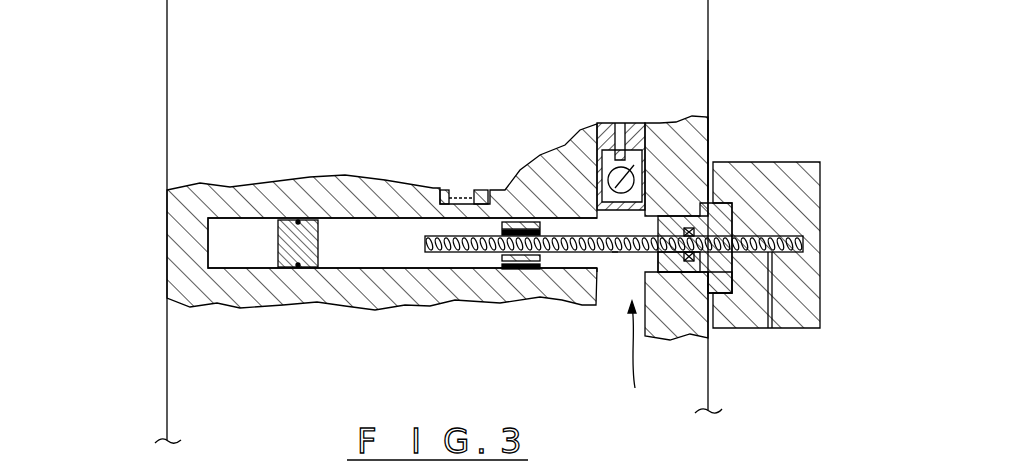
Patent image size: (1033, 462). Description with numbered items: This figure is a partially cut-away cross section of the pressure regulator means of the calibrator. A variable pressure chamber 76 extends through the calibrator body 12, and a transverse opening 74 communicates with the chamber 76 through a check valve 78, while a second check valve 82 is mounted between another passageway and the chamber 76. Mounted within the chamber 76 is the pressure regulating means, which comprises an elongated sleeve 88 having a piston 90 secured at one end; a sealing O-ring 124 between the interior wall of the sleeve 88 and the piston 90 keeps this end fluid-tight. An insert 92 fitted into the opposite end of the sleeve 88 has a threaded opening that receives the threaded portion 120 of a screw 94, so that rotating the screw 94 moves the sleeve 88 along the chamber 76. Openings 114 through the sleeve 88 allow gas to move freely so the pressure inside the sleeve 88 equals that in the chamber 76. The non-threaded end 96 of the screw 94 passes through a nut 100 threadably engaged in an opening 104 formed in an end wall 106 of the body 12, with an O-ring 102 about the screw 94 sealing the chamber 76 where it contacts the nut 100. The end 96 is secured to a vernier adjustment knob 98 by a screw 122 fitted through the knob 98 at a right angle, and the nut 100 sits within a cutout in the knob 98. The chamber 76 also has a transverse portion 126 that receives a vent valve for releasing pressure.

The calibrator body 12 is at (676, 52).
The end wall 106 is at (709, 80).
The check valve 78 is at (650, 177).
The elongated sleeve 88 is at (381, 266).
The piston 90 is at (282, 260).
The sealing O-ring 124 is at (298, 265).
The check valve 82 is at (462, 190).
The openings 114 is at (545, 227).
The screw 94 is at (805, 246).
The transverse opening 74 is at (623, 128).
The opening 104 is at (662, 218).
The non-threaded end of the screw 96 is at (723, 203).
The nut 100 is at (731, 285).
The O-ring 102 is at (688, 285).
The vernier adjustment knob 98 is at (790, 215).
The screw 122 is at (776, 300).
The insert 92 is at (517, 268).
The threaded portion 120 is at (625, 270).
The transverse portion 126 is at (615, 253).
The variable pressure chamber 76 is at (619, 356).